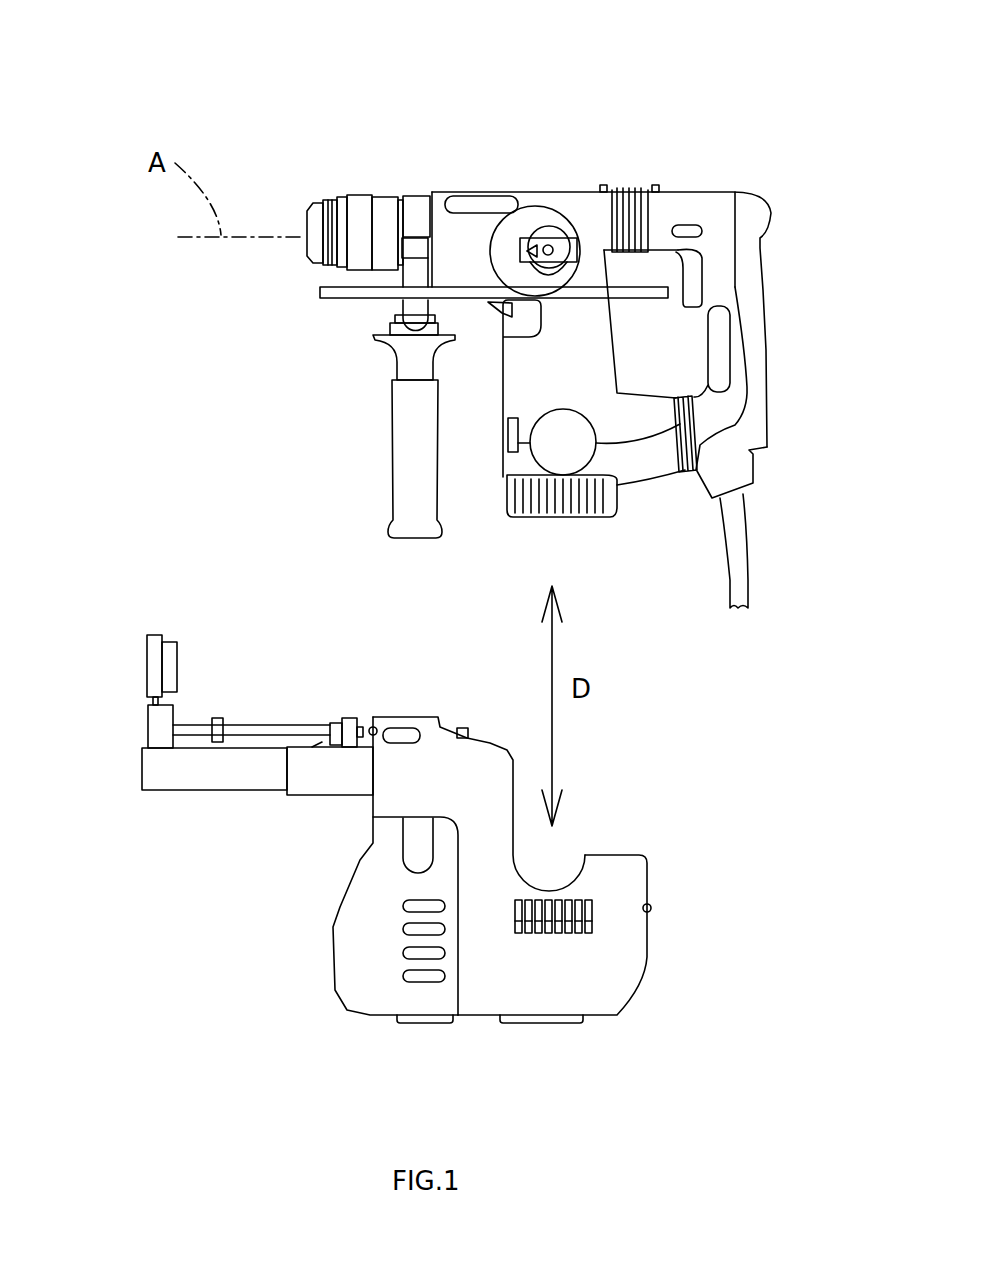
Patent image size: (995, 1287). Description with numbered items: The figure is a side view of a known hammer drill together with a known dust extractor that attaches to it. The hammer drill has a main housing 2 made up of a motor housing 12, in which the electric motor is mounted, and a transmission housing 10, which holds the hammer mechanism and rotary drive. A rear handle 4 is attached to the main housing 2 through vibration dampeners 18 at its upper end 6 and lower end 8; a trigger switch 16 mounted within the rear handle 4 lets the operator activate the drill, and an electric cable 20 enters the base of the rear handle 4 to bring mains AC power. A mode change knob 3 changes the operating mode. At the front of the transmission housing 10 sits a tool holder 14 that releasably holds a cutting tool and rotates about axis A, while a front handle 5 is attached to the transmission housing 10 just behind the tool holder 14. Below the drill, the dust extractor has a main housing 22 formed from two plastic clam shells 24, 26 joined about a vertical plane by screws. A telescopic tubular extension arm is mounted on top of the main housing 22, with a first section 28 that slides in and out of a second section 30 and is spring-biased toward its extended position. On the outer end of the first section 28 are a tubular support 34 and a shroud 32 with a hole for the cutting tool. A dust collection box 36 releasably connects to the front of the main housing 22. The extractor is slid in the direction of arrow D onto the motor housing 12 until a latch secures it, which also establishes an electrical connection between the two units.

The main housing 2 is at (497, 135).
The mode change knob 3 is at (540, 233).
The rear handle 4 is at (718, 275).
The front handle 5 is at (426, 441).
The upper end 6 is at (688, 205).
The lower end 8 is at (718, 407).
The transmission housing 10 is at (566, 192).
The motor housing 12 is at (513, 388).
The tool holder 14 is at (318, 208).
The trigger switch 16 is at (690, 287).
The vibration dampeners 18 is at (620, 190).
The electric cable 20 is at (737, 560).
The main housing 22 is at (555, 1030).
The clam shell 24 is at (613, 942).
The clam shell 26 is at (583, 853).
The first section 28 is at (220, 777).
The second section 30 is at (318, 780).
The shroud 32 is at (152, 670).
The tubular support 34 is at (157, 730).
The dust collection box 36 is at (357, 983).